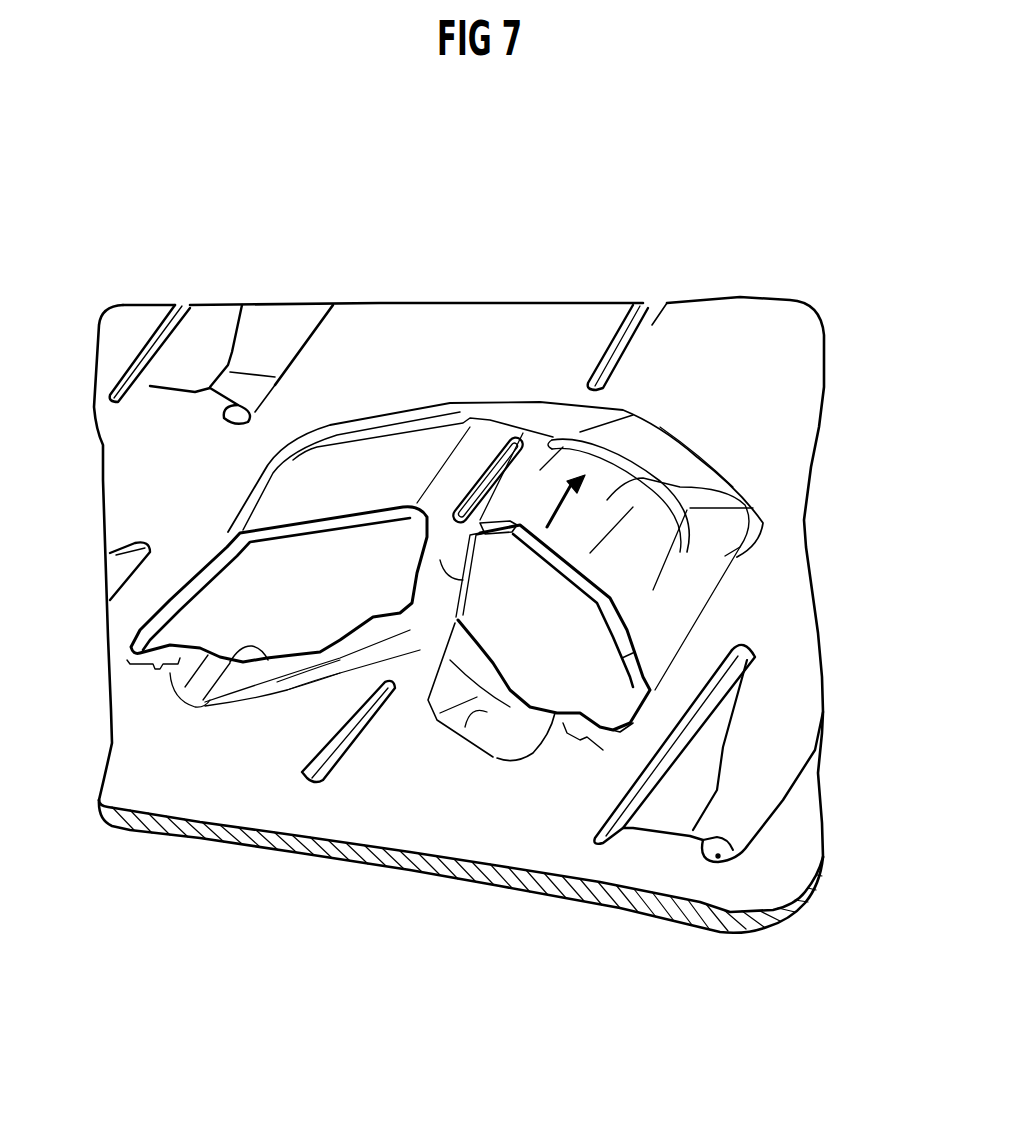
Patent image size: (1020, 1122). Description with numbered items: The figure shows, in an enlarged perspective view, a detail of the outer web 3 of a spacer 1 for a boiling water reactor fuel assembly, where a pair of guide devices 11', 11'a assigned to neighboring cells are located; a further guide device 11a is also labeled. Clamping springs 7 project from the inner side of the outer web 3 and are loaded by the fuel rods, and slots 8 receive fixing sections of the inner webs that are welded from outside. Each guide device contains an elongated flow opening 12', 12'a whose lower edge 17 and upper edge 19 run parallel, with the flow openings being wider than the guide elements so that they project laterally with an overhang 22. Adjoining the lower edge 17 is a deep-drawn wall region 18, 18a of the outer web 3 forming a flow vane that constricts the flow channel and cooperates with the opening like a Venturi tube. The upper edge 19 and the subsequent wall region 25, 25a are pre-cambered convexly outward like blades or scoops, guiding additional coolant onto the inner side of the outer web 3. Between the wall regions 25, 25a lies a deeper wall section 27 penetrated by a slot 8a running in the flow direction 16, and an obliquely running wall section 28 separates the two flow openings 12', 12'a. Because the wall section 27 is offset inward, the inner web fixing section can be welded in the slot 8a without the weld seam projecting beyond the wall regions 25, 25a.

The spacer 1 is at (780, 377).
The outer web 3 is at (774, 435).
The clamping spring 7 is at (283, 320).
The slot 8 is at (630, 325).
The slot 8a is at (492, 465).
The guide device 11' is at (131, 698).
The guide device 11a is at (549, 733).
The guide device 11'a is at (750, 543).
The flow opening 12' is at (237, 588).
The flow opening 12'a is at (668, 627).
The flow direction 16 is at (607, 500).
The lower edge 17 is at (300, 663).
The deep-drawn wall region 18 is at (282, 680).
The deep-drawn wall region 18a is at (463, 697).
The upper edge 19 is at (355, 523).
The overhang 22 is at (157, 670).
The wall region 25 is at (393, 480).
The wall region 25a is at (750, 480).
The wall section 27 is at (533, 470).
The wall section 28 is at (450, 547).